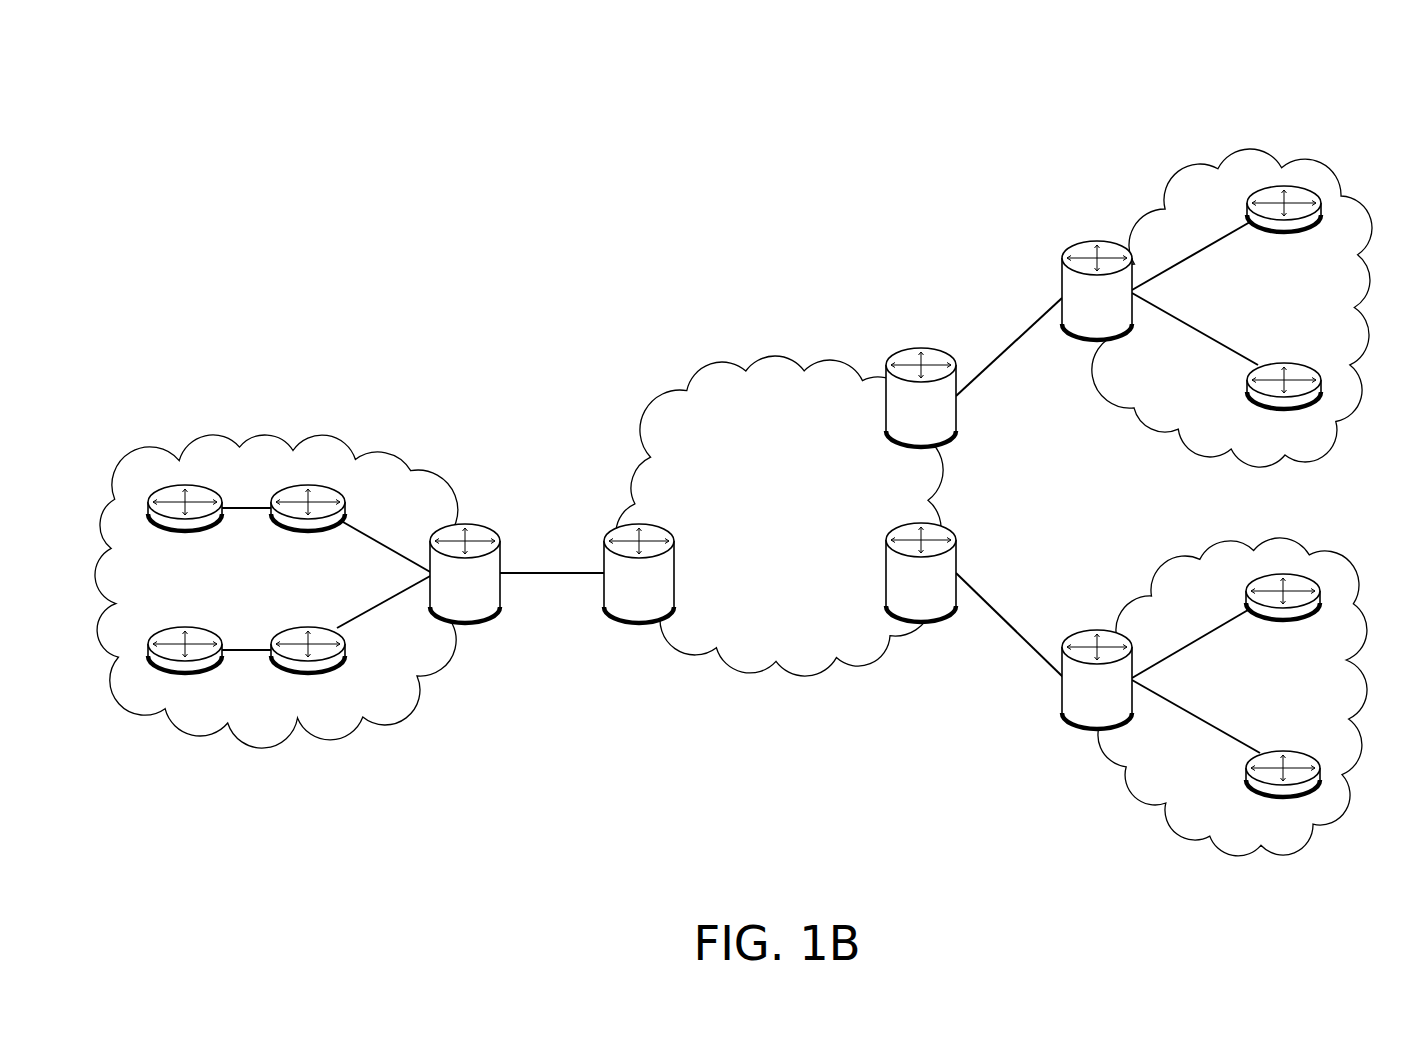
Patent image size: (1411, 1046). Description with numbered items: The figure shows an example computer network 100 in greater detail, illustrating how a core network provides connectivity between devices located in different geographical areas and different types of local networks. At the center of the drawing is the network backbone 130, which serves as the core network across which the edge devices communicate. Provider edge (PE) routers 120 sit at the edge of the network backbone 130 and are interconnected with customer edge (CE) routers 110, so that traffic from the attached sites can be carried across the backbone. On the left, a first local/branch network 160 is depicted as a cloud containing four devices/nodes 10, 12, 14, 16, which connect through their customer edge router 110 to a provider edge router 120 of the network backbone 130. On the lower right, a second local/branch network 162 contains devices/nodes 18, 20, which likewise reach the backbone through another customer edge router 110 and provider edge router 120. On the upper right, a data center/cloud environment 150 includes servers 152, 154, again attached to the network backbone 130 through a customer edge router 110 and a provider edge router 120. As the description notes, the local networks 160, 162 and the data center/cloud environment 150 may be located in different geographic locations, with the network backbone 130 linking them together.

The computer network 100 is at (1323, 90).
The customer edge (CE) router 110 is at (448, 611).
The provider edge (PE) router 120 is at (622, 611).
The network backbone 130 is at (768, 532).
The data center/cloud environment 150 is at (1193, 169).
The server 152 is at (1284, 225).
The server 154 is at (1284, 401).
The local/branch network 160 is at (323, 429).
The local/branch network 162 is at (1114, 777).
The device/node 10 is at (185, 525).
The device/node 12 is at (308, 525).
The device/node 14 is at (185, 667).
The device/node 16 is at (308, 667).
The device/node 18 is at (1283, 790).
The device/node 20 is at (1283, 613).